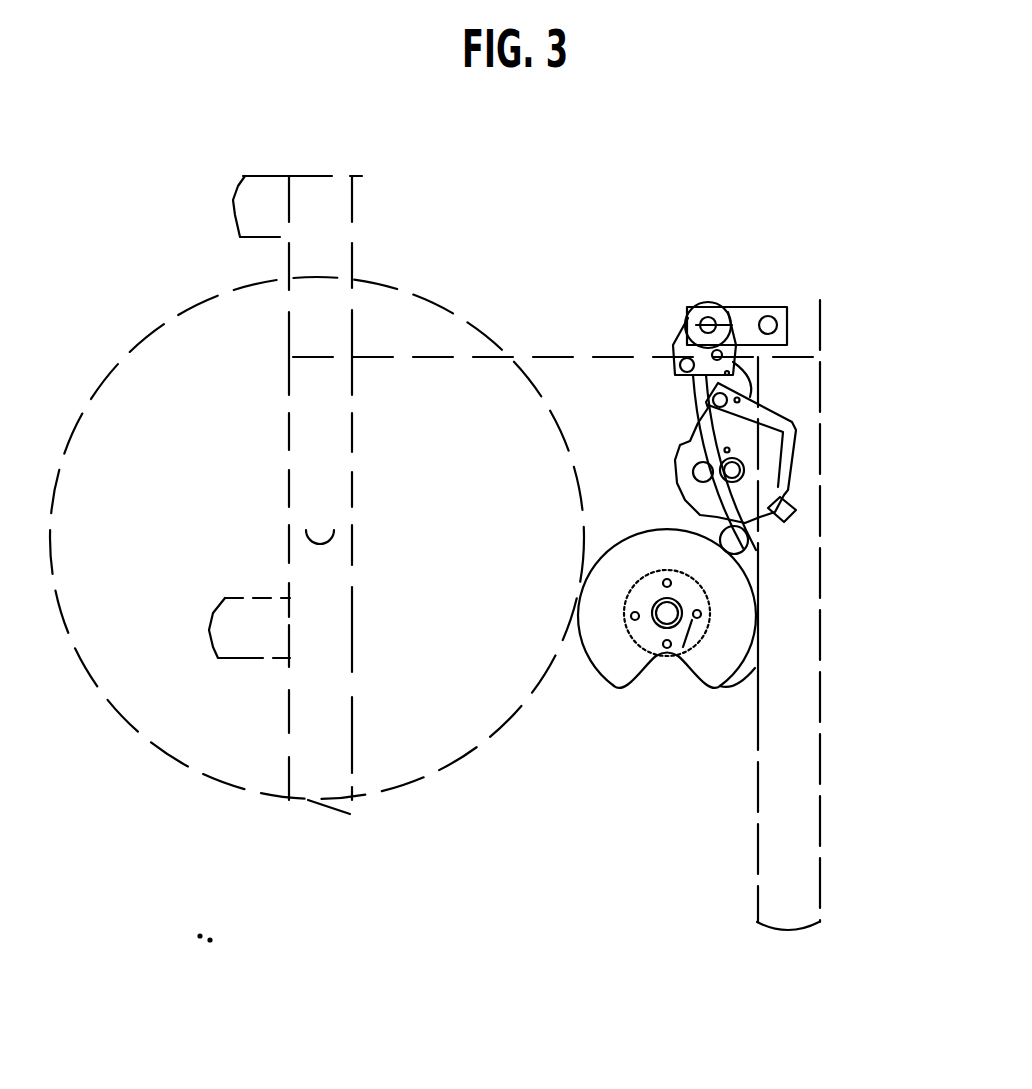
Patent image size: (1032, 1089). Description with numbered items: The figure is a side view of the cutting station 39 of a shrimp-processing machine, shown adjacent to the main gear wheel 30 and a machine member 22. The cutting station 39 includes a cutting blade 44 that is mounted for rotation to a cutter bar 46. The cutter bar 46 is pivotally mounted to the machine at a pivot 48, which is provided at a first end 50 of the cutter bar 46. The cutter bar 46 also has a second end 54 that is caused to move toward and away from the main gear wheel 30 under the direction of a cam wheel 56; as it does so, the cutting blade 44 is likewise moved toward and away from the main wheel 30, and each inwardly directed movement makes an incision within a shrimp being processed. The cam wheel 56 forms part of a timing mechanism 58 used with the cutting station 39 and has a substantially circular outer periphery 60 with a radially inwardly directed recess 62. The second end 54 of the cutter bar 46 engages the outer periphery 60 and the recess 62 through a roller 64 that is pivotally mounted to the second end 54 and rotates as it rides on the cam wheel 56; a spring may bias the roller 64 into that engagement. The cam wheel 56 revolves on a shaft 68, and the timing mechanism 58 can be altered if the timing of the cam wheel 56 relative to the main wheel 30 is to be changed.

The rod 22 is at (811, 633).
The main gear wheel 30 is at (410, 308).
The cutting station 39 is at (832, 348).
The cutting blade 44 is at (695, 456).
The cutter bar 46 is at (680, 340).
The pivot 48 is at (708, 335).
The first end 50 is at (748, 316).
The second end 54 is at (795, 541).
The cam wheel 56 is at (710, 665).
The timing mechanism 58 is at (568, 683).
The outer periphery 60 is at (722, 673).
The recess 62 is at (647, 665).
The roller 64 is at (730, 542).
The shaft 68 is at (656, 610).